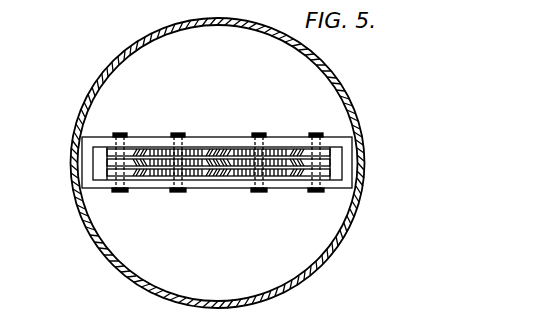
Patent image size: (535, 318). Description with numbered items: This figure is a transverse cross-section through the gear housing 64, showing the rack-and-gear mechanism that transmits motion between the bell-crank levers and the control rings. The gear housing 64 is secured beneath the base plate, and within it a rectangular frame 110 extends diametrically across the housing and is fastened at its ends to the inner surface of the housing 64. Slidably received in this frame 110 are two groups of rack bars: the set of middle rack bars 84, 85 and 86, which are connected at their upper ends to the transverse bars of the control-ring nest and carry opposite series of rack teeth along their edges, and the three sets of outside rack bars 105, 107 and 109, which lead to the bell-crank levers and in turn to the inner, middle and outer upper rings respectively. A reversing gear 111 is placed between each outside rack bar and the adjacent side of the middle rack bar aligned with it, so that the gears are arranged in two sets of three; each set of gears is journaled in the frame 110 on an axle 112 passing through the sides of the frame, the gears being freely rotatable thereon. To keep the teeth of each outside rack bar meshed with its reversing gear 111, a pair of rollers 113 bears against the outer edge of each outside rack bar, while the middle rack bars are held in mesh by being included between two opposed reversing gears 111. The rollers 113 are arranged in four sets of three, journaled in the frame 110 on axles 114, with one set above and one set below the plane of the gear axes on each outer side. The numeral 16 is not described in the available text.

The conveyor section 16 is at (202, 9).
The gear housing 64 is at (102, 258).
The rack bar 84 is at (229, 150).
The rack bar 85 is at (206, 150).
The rack bar 86 is at (205, 178).
The outside rack bars 105 is at (144, 153).
The outside rack bars 107 is at (134, 150).
The outside rack bars 109 is at (143, 178).
The rectangular frame 110 is at (100, 138).
The reversing gear 111 is at (167, 177).
The axle 112 is at (181, 135).
The rollers 113 is at (118, 189).
The axles 114 is at (121, 133).